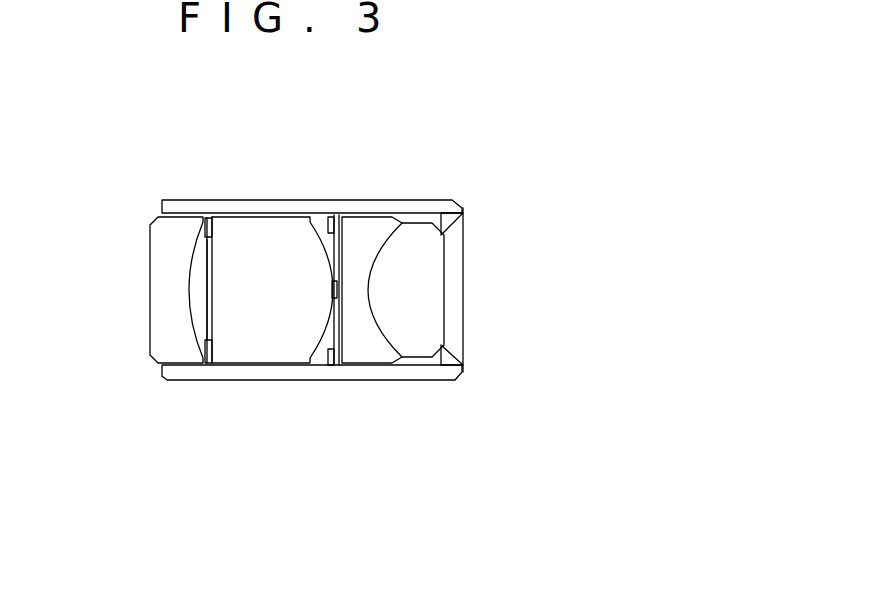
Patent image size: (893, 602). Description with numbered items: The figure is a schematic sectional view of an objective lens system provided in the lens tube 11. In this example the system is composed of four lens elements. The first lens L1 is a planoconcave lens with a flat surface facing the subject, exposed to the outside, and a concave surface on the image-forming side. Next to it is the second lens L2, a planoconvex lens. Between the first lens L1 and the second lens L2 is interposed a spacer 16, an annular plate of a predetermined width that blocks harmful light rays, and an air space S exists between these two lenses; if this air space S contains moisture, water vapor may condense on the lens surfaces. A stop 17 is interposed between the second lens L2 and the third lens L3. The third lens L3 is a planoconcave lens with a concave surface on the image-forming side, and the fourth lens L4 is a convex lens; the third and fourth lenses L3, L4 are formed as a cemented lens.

The lens tube 11 is at (417, 372).
The spacer 16 is at (202, 346).
The stop 17 is at (330, 340).
The first lens L1 is at (160, 286).
The second lens L2 is at (273, 230).
The third lens L3 is at (365, 235).
The fourth lens L4 is at (420, 282).
The air space S is at (200, 272).